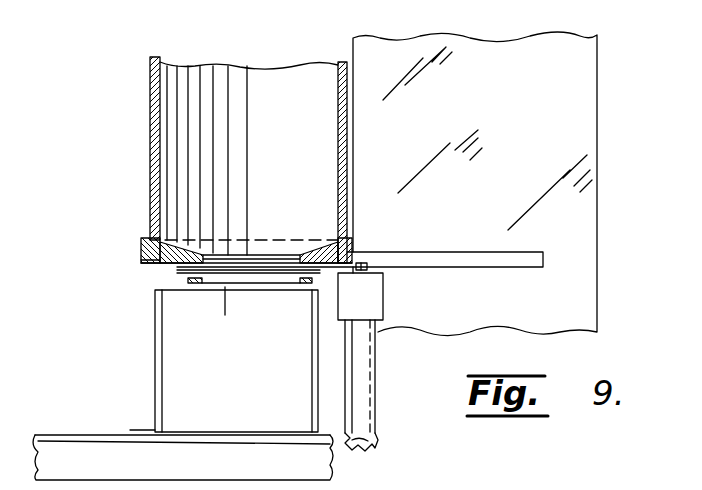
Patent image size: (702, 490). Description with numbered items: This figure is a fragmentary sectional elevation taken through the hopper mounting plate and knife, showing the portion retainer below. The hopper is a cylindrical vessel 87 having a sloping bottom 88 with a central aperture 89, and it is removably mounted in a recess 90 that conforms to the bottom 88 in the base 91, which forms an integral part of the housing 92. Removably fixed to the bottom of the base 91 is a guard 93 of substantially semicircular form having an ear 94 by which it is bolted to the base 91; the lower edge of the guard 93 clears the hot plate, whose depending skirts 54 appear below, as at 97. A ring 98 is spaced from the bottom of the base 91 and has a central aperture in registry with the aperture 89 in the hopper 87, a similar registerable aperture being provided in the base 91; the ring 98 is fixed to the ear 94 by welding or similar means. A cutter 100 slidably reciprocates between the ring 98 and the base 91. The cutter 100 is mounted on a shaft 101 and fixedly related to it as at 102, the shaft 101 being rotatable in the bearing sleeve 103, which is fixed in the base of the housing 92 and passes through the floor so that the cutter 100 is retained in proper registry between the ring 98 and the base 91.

The depending skirts 54 is at (78, 434).
The cylindrical vessel 87 is at (150, 130).
The sloping bottom 88 is at (170, 246).
The central aperture 89 is at (238, 258).
The recess 90 is at (141, 247).
The base 91 is at (141, 258).
The housing 92 is at (515, 119).
The guard 93 is at (155, 329).
The ear 94 is at (233, 315).
The clearance 97 is at (140, 431).
The ring 98 is at (195, 283).
The cutter 100 is at (177, 270).
The shaft 101 is at (368, 443).
The fixed connection 102 is at (360, 263).
The bearing sleeve 103 is at (359, 384).